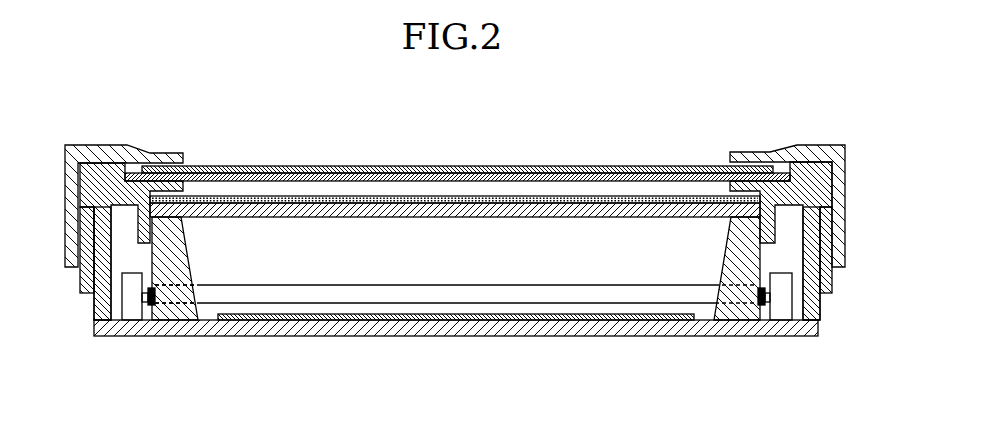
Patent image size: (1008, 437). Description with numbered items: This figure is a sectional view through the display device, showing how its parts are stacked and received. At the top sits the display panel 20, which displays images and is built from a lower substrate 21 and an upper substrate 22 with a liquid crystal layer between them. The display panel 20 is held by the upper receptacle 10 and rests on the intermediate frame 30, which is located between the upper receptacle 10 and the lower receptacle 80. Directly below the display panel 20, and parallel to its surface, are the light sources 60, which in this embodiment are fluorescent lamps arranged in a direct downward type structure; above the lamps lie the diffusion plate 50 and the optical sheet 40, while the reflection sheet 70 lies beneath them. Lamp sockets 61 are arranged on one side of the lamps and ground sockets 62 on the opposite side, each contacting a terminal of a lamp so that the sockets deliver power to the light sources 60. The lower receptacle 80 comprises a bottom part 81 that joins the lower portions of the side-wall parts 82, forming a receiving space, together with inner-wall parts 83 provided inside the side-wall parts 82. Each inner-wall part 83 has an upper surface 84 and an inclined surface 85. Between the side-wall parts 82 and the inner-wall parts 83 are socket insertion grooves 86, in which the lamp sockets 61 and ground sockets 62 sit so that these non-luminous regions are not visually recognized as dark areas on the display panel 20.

The upper receptacle 10 is at (843, 146).
The display panel 20 is at (457, 139).
The lower substrate 21 is at (447, 166).
The upper substrate 22 is at (486, 173).
The intermediate frame 30 is at (829, 178).
The optical sheet 40 is at (325, 209).
The diffusion plate 50 is at (278, 199).
The light sources 60 is at (382, 298).
The lamp sockets 61 is at (133, 292).
The ground sockets 62 is at (785, 310).
The reflection sheet 70 is at (417, 324).
The lower receptacle 80 is at (447, 308).
The bottom part 81 is at (215, 337).
The side-wall parts 82 is at (93, 315).
The inner-wall parts 83 is at (455, 335).
The upper surface 84 is at (155, 306).
The inclined surface 85 is at (176, 324).
The socket insertion grooves 86 is at (80, 283).